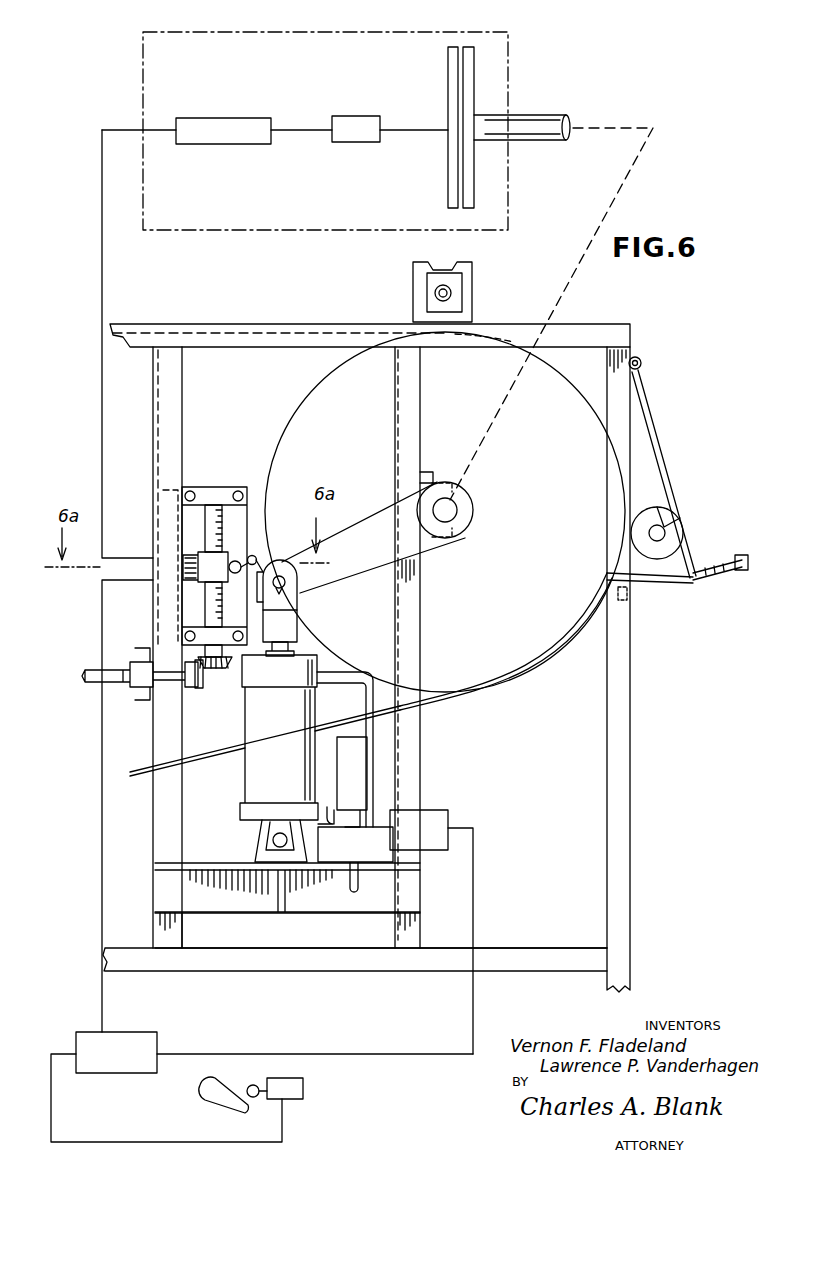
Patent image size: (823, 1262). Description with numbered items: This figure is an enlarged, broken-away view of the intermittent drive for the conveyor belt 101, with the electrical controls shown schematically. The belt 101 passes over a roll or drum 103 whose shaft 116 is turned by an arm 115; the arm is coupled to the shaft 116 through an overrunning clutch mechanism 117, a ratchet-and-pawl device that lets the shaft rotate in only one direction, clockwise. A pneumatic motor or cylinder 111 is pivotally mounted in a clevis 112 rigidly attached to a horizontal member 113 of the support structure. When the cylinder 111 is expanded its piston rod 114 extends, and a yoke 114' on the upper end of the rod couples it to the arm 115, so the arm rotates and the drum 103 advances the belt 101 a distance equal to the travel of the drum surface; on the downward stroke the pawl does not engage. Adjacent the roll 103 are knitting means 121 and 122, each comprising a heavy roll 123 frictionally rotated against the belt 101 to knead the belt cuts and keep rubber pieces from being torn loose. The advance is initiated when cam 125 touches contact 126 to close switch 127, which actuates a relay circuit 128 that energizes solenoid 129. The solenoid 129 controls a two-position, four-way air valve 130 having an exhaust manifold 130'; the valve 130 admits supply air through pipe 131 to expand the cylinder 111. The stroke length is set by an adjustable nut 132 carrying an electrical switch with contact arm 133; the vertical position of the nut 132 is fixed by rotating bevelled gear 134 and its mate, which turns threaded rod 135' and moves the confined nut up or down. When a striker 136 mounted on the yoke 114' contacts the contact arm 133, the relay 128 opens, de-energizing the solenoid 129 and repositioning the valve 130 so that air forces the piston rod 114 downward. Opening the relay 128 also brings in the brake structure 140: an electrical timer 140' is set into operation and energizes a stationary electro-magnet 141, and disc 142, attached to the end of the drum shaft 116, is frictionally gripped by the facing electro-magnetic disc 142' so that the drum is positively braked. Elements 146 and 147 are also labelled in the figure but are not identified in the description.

The conveyor belt 101 is at (108, 332).
The roll 103 is at (522, 655).
The pneumatic motor or cylinder 111 is at (258, 786).
The clevis 112 is at (268, 840).
The horizontal member 113 is at (166, 890).
The piston rod 114 is at (247, 683).
The yoke 114' is at (309, 626).
The arm 115 is at (358, 524).
The shaft 116 is at (537, 136).
The overrunning clutch mechanism 117 is at (470, 510).
The knitting means 121 is at (472, 272).
The knitting means 122 is at (662, 502).
The heavy roll 123 is at (652, 488).
The cam 125 is at (220, 1098).
The contact 126 is at (250, 1085).
The switch 127 is at (276, 1078).
The relay circuit 128 is at (152, 1020).
The solenoid 129 is at (428, 820).
The two position four way air valve 130 is at (362, 861).
The exhaust manifold 130' is at (399, 776).
The pipe 131 is at (318, 676).
The adjustable nut 132 is at (206, 569).
The contact arm 133 is at (266, 548).
The bevelled gear 134 is at (200, 670).
The threaded rod 135' is at (214, 548).
The striker 136 is at (290, 600).
The brake structure 140 is at (325, 144).
The electrical timer 140' is at (227, 115).
The stationary electro-magnet 141 is at (385, 116).
The disc 142 is at (507, 125).
The electro-magnetic disc 142' is at (421, 127).
The rack 146 is at (206, 606).
The frame post 147 is at (165, 524).